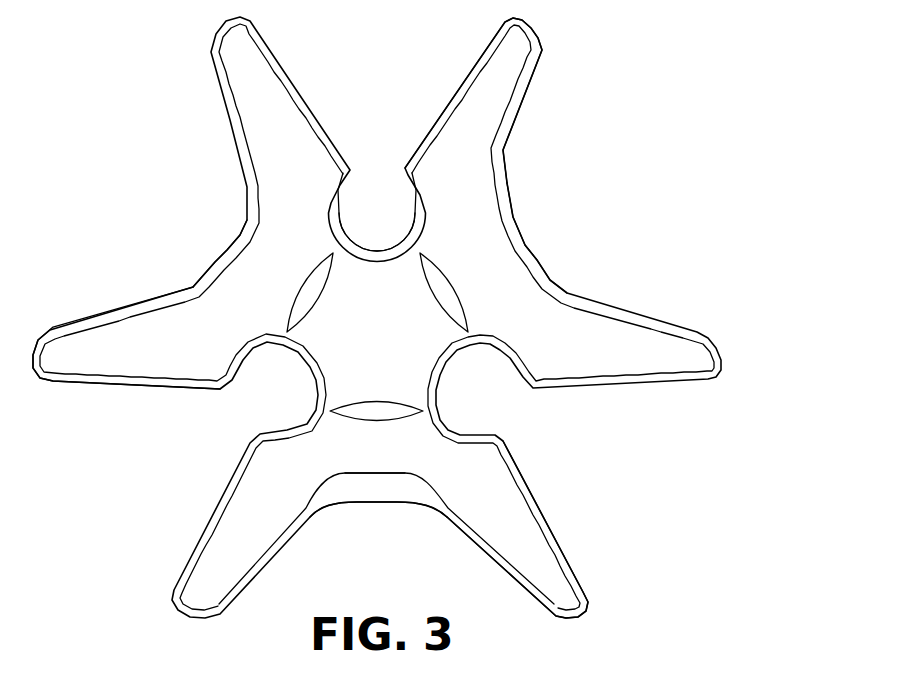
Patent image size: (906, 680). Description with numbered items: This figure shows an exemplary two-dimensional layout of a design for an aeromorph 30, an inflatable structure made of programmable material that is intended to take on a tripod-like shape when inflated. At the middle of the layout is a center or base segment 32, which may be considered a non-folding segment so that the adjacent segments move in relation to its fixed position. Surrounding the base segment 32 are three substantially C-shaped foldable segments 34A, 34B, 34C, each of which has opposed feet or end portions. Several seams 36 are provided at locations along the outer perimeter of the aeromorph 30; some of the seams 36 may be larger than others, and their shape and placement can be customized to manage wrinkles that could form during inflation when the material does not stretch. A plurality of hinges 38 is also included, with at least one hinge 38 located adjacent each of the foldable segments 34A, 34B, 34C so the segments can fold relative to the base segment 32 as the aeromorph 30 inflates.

The aeromorph 30 is at (715, 121).
The base segment 32 is at (371, 327).
The foldable segment 34A is at (503, 137).
The foldable segment 34B is at (493, 528).
The foldable segment 34C is at (147, 327).
The seam 36 is at (227, 251).
The hinge 38 is at (433, 274).